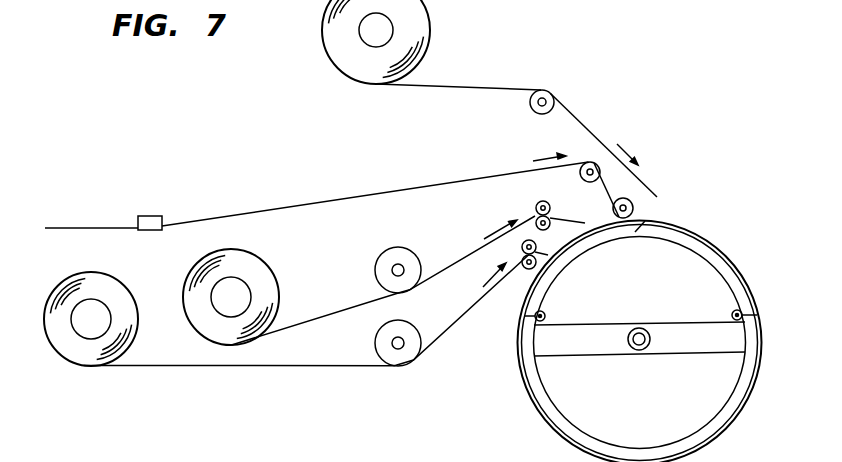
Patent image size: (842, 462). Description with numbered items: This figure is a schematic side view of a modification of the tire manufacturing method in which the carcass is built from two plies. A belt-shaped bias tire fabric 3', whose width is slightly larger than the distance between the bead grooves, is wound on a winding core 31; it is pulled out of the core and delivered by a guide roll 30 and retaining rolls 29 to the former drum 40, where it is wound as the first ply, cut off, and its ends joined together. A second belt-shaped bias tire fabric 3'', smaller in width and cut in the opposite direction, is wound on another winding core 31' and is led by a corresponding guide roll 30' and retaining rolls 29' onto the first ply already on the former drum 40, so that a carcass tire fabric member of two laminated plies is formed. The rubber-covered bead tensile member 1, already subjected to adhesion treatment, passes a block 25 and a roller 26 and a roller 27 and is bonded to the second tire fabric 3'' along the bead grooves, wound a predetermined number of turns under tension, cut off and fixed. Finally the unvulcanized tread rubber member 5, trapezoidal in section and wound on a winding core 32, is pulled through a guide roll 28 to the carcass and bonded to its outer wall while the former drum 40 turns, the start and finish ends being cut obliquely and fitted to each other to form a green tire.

The bead tensile member 1 is at (377, 192).
The bias tire fabric 3' is at (306, 310).
The bias tire fabric 3'' is at (383, 280).
The tread rubber member 5 is at (578, 118).
The sensor/guide block 25 is at (152, 199).
The guide roller 26 is at (580, 175).
The guide roller 27 is at (633, 207).
The guide roll 28 is at (530, 108).
The retaining rolls 29 is at (518, 280).
The pinch rollers 29' is at (531, 209).
The guide roll 30 is at (410, 330).
The guide roller 30' is at (412, 255).
The winding core 31 is at (100, 312).
The winding core 31' is at (246, 290).
The winding core 32 is at (384, 30).
The former drum 40 is at (688, 328).